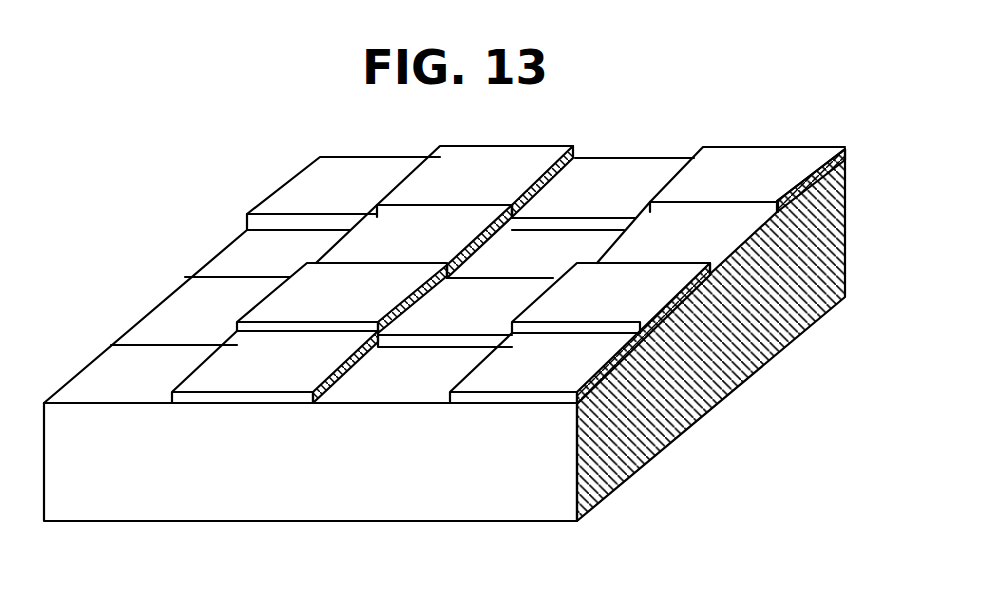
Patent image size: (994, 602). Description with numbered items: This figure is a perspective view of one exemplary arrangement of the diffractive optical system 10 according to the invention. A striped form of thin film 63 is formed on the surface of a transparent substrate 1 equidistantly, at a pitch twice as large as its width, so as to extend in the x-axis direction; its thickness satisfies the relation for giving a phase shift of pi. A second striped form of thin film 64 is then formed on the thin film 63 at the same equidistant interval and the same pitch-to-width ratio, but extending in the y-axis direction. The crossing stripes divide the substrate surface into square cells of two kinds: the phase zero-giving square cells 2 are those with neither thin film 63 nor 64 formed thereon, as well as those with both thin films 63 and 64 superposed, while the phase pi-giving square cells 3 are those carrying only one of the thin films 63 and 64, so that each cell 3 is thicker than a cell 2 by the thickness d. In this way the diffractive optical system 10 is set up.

The transparent substrate 1 is at (843, 238).
The phase zero-giving square cell 2 is at (78, 391).
The phase π-giving square cell 3 is at (182, 294).
The diffractive optical system 10 is at (408, 574).
The striped form of thin film 63 is at (148, 323).
The striped form of thin film 64 is at (231, 379).